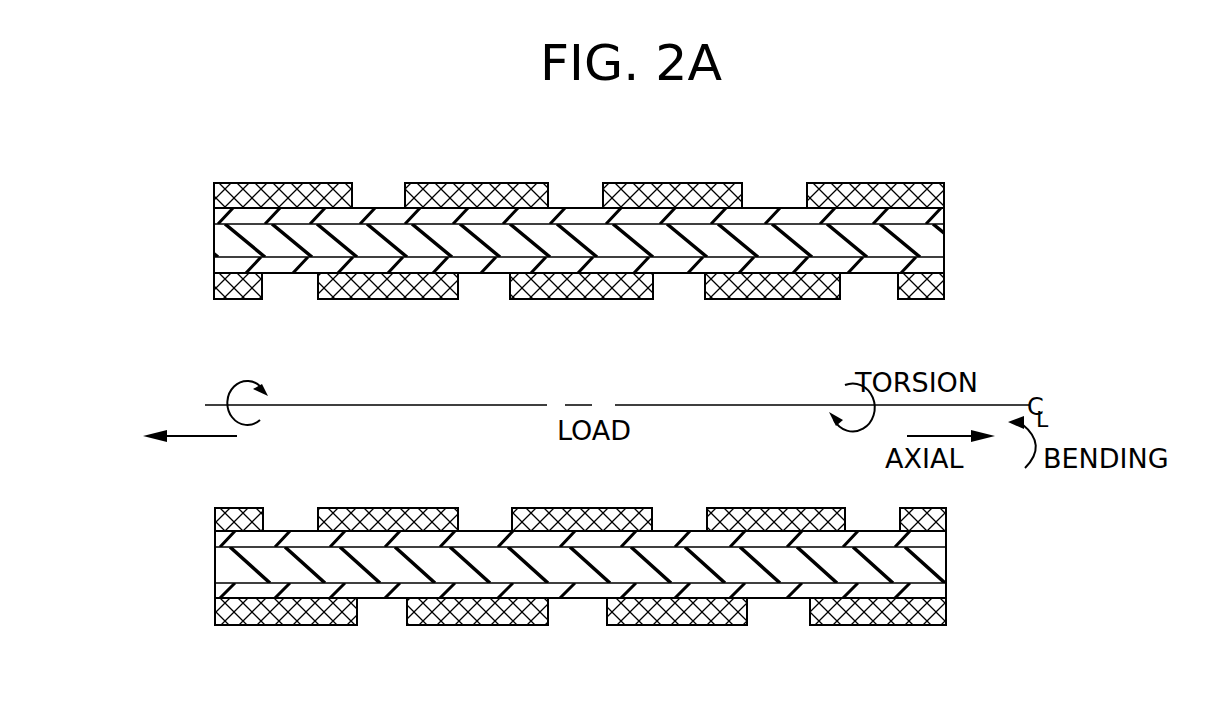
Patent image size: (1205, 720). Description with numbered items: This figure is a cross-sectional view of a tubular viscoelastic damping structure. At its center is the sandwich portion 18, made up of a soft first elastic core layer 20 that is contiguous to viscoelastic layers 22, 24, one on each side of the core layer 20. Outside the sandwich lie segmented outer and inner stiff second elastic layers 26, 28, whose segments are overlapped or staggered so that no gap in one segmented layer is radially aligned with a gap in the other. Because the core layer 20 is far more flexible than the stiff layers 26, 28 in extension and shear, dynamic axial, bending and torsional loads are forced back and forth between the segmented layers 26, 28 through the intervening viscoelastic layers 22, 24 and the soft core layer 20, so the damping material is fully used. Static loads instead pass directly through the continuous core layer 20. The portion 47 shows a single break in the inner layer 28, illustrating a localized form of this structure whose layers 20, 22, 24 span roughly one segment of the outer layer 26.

The sandwich portion 18 is at (946, 214).
The soft first elastic core layer 20 is at (214, 243).
The viscoelastic layer 22 is at (946, 212).
The viscoelastic layer 24 is at (946, 270).
The segmented outer stiff second elastic layer 26 is at (946, 195).
The segmented inner stiff second elastic layer 28 is at (946, 287).
The portion 47 is at (405, 162).